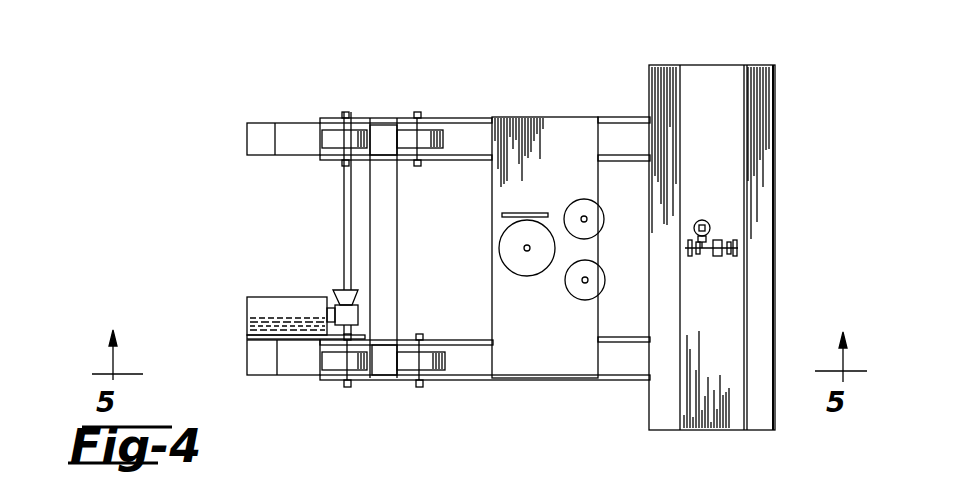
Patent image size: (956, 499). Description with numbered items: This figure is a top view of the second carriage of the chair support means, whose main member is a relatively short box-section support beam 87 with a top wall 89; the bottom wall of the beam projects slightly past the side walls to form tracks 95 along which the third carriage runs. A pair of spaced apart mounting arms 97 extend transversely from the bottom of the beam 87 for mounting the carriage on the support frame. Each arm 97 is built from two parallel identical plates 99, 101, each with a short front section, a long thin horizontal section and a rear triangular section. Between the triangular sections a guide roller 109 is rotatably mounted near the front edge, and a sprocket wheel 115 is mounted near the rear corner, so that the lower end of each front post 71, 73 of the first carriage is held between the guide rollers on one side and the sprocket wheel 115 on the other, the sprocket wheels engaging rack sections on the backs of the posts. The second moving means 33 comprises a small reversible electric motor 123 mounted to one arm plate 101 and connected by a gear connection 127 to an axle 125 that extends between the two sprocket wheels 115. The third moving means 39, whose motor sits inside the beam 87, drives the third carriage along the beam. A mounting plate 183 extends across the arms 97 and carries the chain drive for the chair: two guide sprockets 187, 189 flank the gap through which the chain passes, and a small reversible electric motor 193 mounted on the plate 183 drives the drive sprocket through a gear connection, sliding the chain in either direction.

The second moving means 33 is at (238, 323).
The third moving means 39 is at (726, 228).
The front post 71 is at (385, 360).
The front post 73 is at (385, 128).
The support beam 87 is at (784, 287).
The top wall 89 is at (710, 82).
The tracks 95 is at (762, 173).
The mounting arms 97 is at (463, 112).
The plate 99 is at (608, 117).
The plate 101 is at (623, 155).
The guide roller 109 is at (443, 140).
The sprocket wheel 115 is at (322, 138).
The electric motor 123 is at (258, 297).
The axle 125 is at (343, 200).
The gear connection 127 is at (340, 297).
The mounting plate 183 is at (553, 142).
The guide sprocket 187 is at (583, 199).
The guide sprocket 189 is at (566, 290).
The electric motor 193 is at (500, 248).